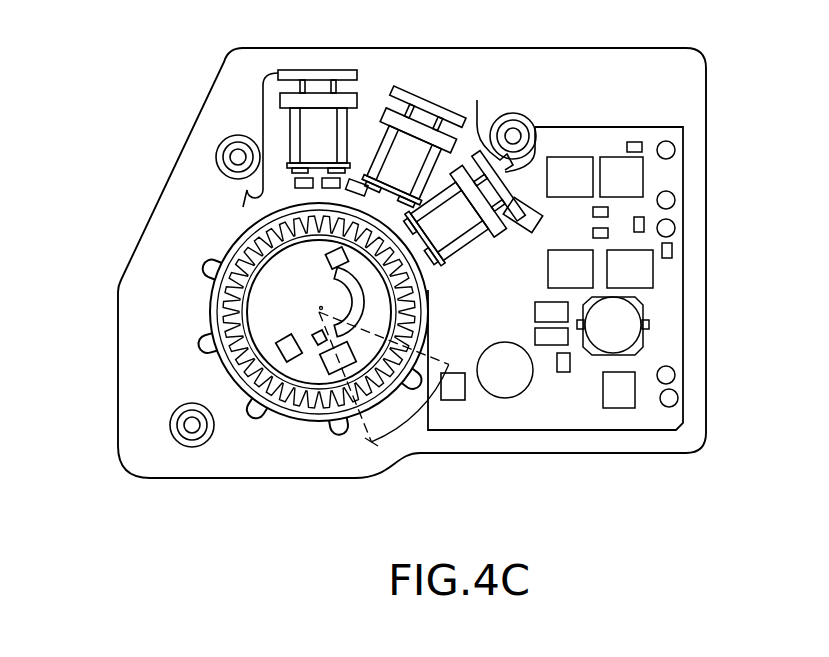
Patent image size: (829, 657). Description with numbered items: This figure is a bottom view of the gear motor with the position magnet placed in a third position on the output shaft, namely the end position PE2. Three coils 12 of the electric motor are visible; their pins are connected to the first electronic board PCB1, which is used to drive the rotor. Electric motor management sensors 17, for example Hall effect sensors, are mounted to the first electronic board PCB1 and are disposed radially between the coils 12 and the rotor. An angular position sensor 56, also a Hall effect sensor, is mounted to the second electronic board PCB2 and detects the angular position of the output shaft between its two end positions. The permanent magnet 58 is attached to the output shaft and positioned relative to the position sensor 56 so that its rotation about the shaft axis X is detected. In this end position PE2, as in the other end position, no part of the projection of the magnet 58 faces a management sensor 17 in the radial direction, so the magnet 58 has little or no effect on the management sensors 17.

The coils 12 is at (470, 207).
The electric motor management sensors 17 is at (357, 188).
The angular position sensor 56 is at (328, 362).
The permanent magnet 58 is at (280, 355).
The rotation axis X is at (323, 307).
The first electronic board PCB1 is at (633, 140).
The second electronic board PCB2 is at (302, 360).
The end position PE2 is at (450, 395).